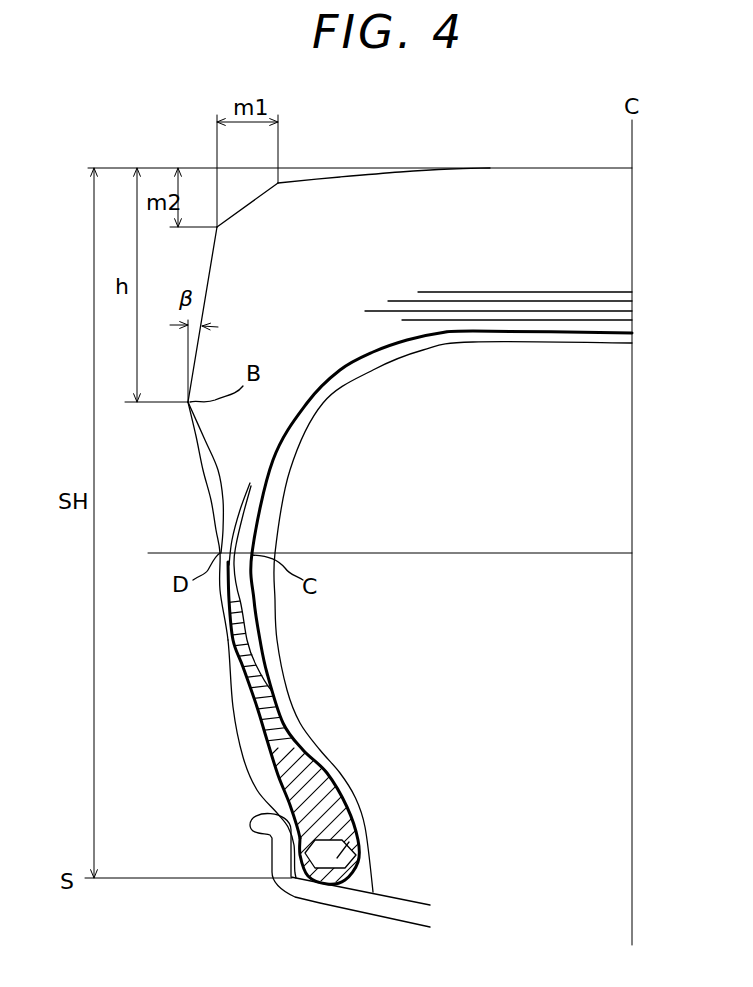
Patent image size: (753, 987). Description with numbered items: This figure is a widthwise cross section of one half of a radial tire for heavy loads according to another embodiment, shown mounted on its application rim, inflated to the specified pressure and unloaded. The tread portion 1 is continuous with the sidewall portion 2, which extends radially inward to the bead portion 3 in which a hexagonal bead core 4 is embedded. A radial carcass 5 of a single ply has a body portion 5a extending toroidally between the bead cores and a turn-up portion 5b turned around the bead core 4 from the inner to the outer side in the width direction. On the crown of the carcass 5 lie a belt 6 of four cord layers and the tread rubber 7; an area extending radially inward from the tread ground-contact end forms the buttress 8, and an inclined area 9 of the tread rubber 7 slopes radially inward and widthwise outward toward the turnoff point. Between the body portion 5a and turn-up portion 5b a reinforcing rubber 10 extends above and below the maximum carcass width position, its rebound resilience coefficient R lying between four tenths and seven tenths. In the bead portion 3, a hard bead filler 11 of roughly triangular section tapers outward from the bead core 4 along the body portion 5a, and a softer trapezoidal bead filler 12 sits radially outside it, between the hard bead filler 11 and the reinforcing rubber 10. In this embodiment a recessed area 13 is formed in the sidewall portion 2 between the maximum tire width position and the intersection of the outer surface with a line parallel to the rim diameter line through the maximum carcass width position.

The tread portion 1 is at (490, 148).
The sidewall portion 2 is at (172, 443).
The bead portion 3 is at (228, 778).
The bead core 4 is at (344, 840).
The radial carcass 5 is at (367, 366).
The body portion 5a is at (280, 703).
The turn-up portion 5b is at (233, 667).
The belt 6 is at (577, 293).
The tread rubber 7 is at (397, 185).
The buttress 8 is at (215, 366).
The inclined area 9 is at (238, 204).
The reinforcing rubber 10 is at (244, 527).
The hard bead filler 11 is at (348, 788).
The soft bead filler 12 is at (243, 712).
The recessed area 13 is at (210, 463).
The rebound resilience coefficient R is at (382, 912).